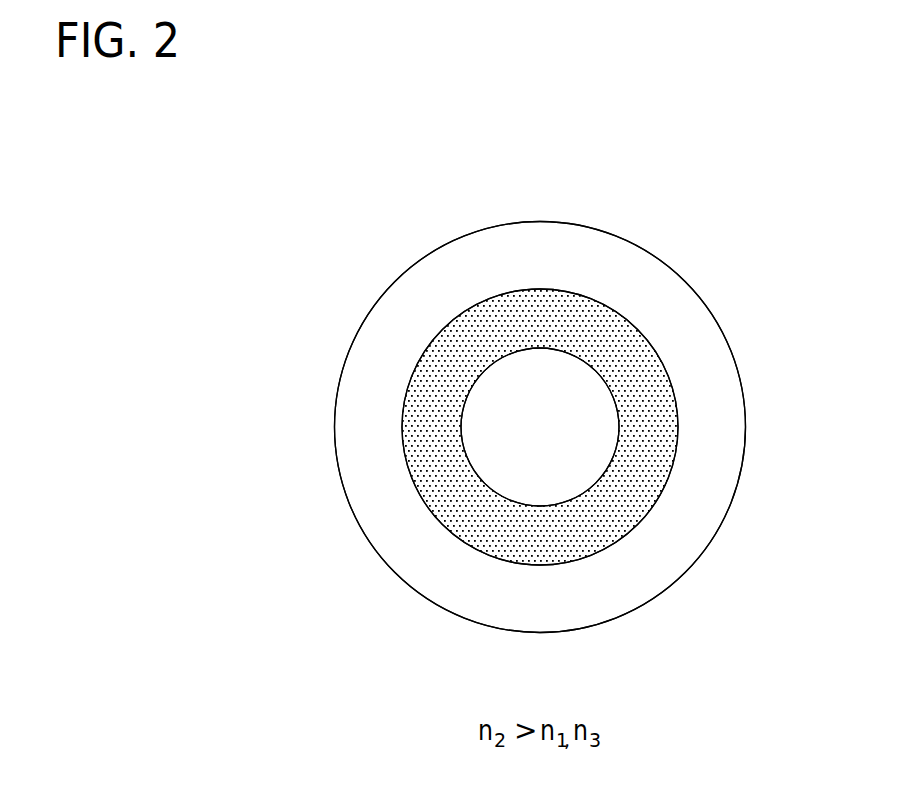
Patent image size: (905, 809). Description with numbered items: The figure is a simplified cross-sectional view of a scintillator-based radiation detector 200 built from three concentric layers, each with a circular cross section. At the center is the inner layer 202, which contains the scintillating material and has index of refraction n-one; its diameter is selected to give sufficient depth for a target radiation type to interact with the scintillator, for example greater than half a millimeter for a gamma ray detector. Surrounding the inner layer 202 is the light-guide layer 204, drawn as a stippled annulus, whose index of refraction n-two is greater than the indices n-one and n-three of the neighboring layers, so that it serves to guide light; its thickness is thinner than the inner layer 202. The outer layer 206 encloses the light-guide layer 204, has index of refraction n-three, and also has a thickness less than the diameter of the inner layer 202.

The radiation detector 200 is at (721, 191).
The inner layer 202 is at (568, 486).
The light-guide layer 204 is at (568, 554).
The outer layer 206 is at (573, 624).